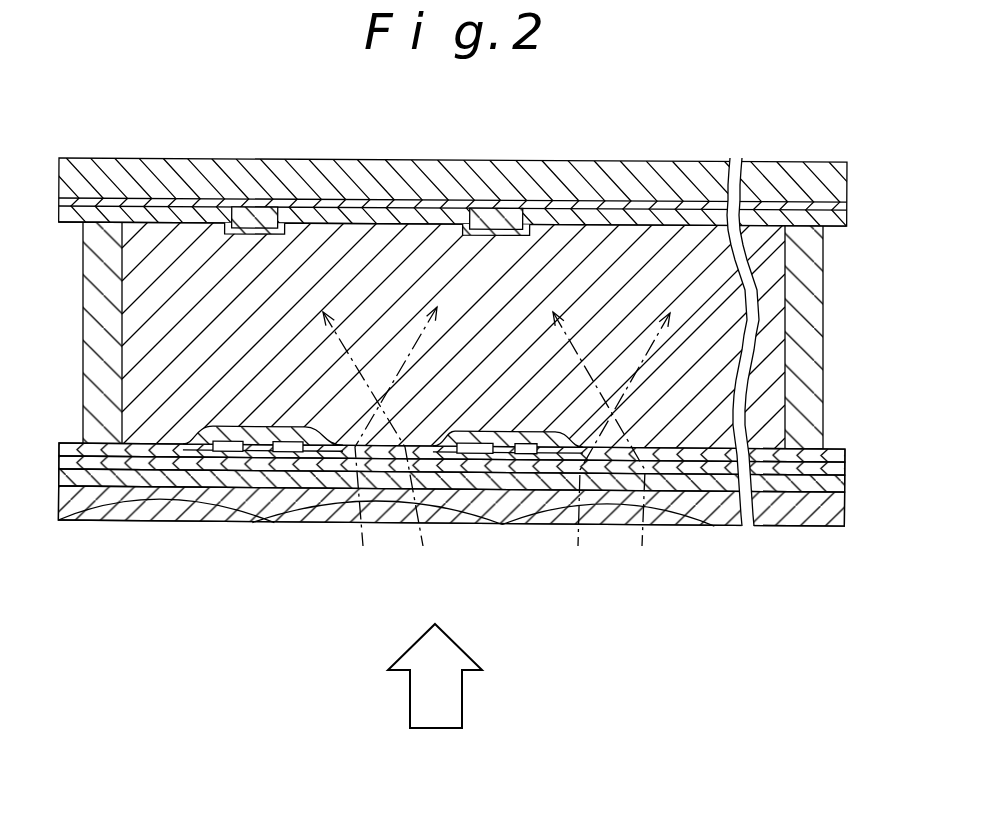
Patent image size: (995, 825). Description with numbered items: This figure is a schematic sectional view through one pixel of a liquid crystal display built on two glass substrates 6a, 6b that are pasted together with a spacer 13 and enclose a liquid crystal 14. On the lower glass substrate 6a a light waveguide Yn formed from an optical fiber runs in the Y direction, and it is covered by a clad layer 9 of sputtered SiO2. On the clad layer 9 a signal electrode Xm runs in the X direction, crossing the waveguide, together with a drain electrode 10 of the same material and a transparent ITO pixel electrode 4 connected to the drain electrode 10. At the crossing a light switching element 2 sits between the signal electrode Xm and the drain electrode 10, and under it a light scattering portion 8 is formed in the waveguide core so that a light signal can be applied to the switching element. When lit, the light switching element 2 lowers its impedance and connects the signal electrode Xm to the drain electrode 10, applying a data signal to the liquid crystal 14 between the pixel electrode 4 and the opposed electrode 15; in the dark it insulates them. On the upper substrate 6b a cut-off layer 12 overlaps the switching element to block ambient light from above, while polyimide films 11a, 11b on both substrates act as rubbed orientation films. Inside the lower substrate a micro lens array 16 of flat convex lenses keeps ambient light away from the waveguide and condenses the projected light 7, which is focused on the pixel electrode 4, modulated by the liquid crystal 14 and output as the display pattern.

The light switching element 2 is at (238, 472).
The pixel electrode 4 is at (327, 468).
The glass substrate 6a is at (797, 512).
The glass substrate 6b is at (457, 174).
The projected light 7 is at (490, 702).
The light scattering portion 8 is at (245, 466).
The clad layer 9 is at (70, 461).
The drain electrode 10 is at (303, 470).
The polyimide 11a is at (292, 482).
The polyimide 11b is at (362, 206).
The cut-off layer 12 is at (258, 212).
The spacer 13 is at (90, 289).
The liquid crystal 14 is at (775, 325).
The opposed electrode 15 is at (818, 206).
The micro lens array 16 is at (112, 513).
The signal electrode Xm is at (190, 507).
The light waveguide Yn is at (840, 490).